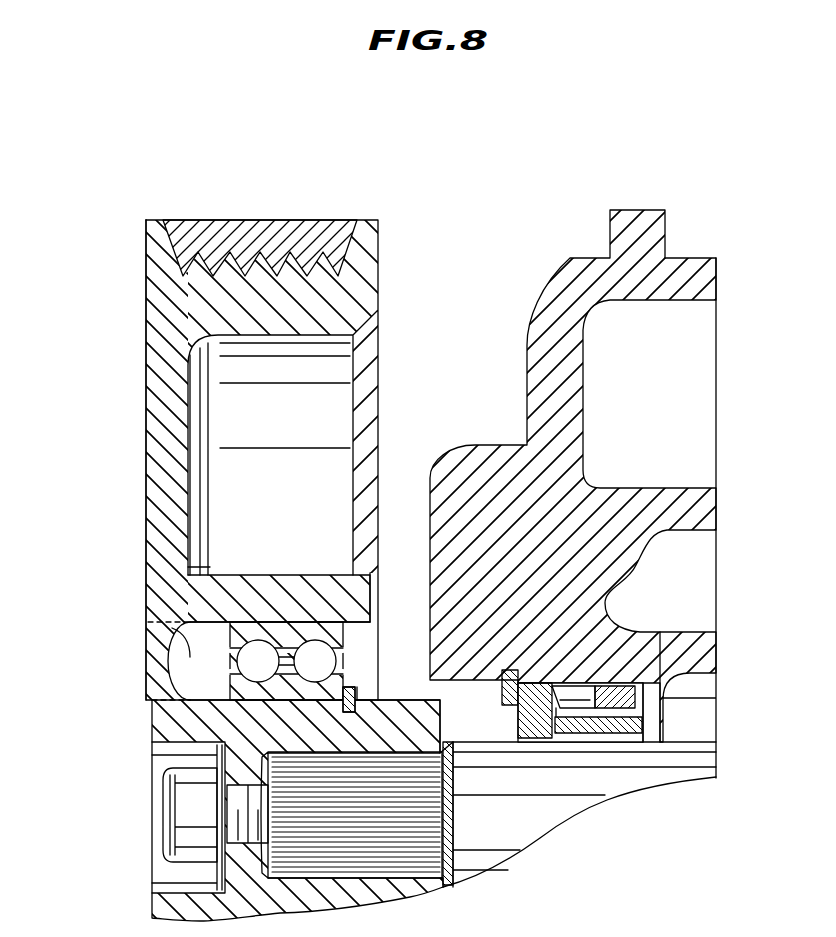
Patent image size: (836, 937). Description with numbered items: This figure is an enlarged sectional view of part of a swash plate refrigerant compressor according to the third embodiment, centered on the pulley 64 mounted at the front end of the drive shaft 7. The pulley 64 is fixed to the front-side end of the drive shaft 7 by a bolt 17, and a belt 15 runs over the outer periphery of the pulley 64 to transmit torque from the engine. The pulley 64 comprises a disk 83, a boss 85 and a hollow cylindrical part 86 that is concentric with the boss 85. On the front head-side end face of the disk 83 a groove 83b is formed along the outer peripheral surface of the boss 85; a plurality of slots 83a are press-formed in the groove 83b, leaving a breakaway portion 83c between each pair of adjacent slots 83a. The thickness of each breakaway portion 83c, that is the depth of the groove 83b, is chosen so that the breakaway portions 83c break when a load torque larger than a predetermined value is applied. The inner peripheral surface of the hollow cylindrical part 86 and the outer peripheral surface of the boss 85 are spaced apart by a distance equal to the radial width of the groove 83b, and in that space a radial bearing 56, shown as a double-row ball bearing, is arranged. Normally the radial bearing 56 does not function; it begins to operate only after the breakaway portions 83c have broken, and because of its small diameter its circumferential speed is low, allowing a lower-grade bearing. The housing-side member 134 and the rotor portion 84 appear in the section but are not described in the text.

The pulley 64 is at (137, 227).
The belt 15 is at (253, 225).
The rotor 84 is at (383, 257).
The housing cover 134 is at (695, 272).
The disk 83 is at (148, 450).
The slots 83a is at (148, 684).
The groove 83b is at (158, 612).
The breakaway portions 83c is at (157, 672).
The radial bearing 56 is at (262, 645).
The hollow cylindrical part 86 is at (322, 598).
The boss 85 is at (405, 712).
The bolt 17 is at (177, 810).
The drive shaft 7 is at (539, 787).